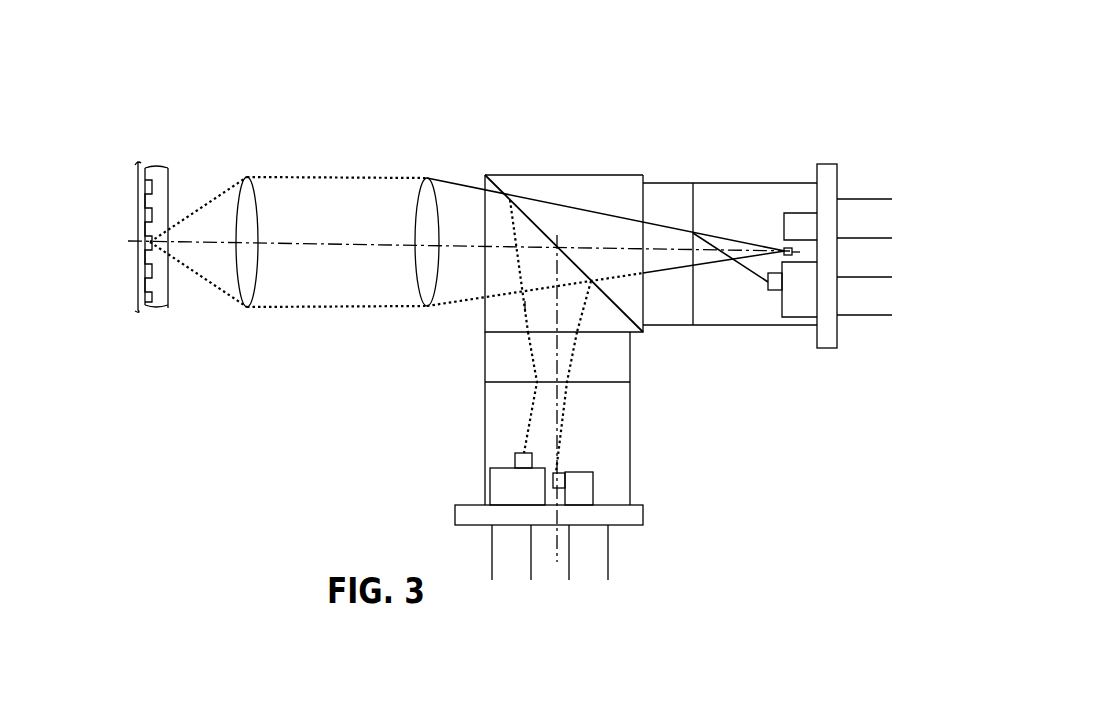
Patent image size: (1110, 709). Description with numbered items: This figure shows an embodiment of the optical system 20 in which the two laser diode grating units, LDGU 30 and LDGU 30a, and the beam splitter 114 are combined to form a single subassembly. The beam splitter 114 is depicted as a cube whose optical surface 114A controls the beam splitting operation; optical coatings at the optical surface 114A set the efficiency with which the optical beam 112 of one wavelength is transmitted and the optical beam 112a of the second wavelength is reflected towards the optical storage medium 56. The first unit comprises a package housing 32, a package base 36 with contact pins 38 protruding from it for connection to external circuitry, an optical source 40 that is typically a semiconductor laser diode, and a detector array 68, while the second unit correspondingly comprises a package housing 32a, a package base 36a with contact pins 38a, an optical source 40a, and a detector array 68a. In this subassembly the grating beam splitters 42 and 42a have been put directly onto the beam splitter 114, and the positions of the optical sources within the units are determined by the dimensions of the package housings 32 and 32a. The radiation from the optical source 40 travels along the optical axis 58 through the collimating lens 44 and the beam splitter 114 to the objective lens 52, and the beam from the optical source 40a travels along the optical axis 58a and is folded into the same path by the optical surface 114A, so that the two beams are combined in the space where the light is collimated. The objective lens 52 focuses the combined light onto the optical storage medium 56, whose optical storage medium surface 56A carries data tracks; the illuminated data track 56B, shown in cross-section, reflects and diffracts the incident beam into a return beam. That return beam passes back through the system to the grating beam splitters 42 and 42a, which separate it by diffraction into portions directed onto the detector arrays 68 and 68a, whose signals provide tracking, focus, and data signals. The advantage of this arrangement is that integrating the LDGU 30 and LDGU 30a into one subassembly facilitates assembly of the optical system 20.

The optical system 20 is at (515, 169).
The LDGU 30 is at (781, 221).
The LDGU 30a is at (588, 493).
The package housing 32 is at (752, 183).
The package housing 32a is at (485, 432).
The package base 36 is at (838, 175).
The package base 36a is at (641, 513).
The contact pins 38 is at (892, 280).
The contact pins 38a is at (531, 565).
The optical source 40 is at (785, 250).
The optical source 40a is at (556, 466).
The grating beam splitter 42 is at (684, 257).
The grating beam splitter 42a is at (538, 395).
The collimating lens 44 is at (427, 307).
The objective lens 52 is at (247, 177).
The optical storage medium 56 is at (102, 217).
The optical storage medium surface 56A is at (138, 299).
The data track 56B is at (138, 243).
The optical axis 58 is at (340, 246).
The optical axis 58a is at (557, 306).
The detector array 68 is at (782, 286).
The detector array 68a is at (515, 455).
The optical beam 112 is at (610, 190).
The optical beam 112a is at (565, 410).
The beam splitter 114 is at (482, 183).
The optical surface 114A is at (533, 190).